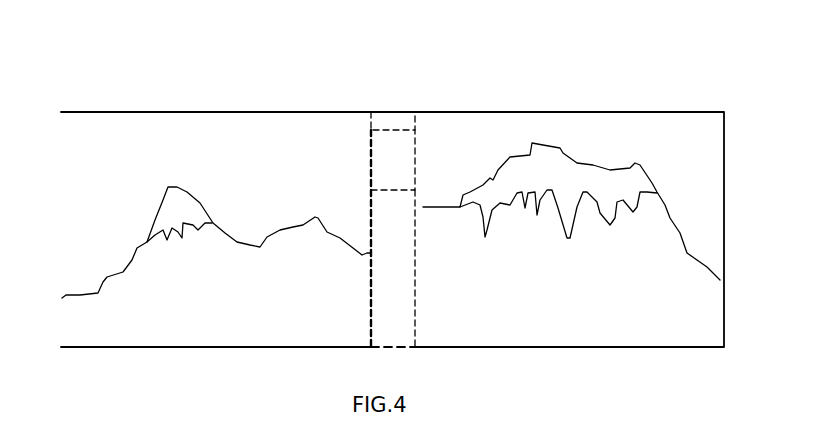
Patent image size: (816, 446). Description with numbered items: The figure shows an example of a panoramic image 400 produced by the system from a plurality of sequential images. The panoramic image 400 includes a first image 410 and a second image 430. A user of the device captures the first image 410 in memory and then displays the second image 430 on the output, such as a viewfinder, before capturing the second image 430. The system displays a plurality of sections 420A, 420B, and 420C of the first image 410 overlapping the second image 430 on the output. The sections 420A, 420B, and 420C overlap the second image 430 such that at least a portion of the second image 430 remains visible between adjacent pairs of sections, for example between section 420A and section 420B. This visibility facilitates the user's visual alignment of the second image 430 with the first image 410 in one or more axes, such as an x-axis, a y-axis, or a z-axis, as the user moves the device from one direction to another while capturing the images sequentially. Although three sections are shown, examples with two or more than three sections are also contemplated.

The panoramic image 400 is at (355, 83).
The first image 410 is at (190, 125).
The section 420A is at (397, 128).
The section 420B is at (393, 171).
The section 420C is at (393, 268).
The second image 430 is at (530, 125).